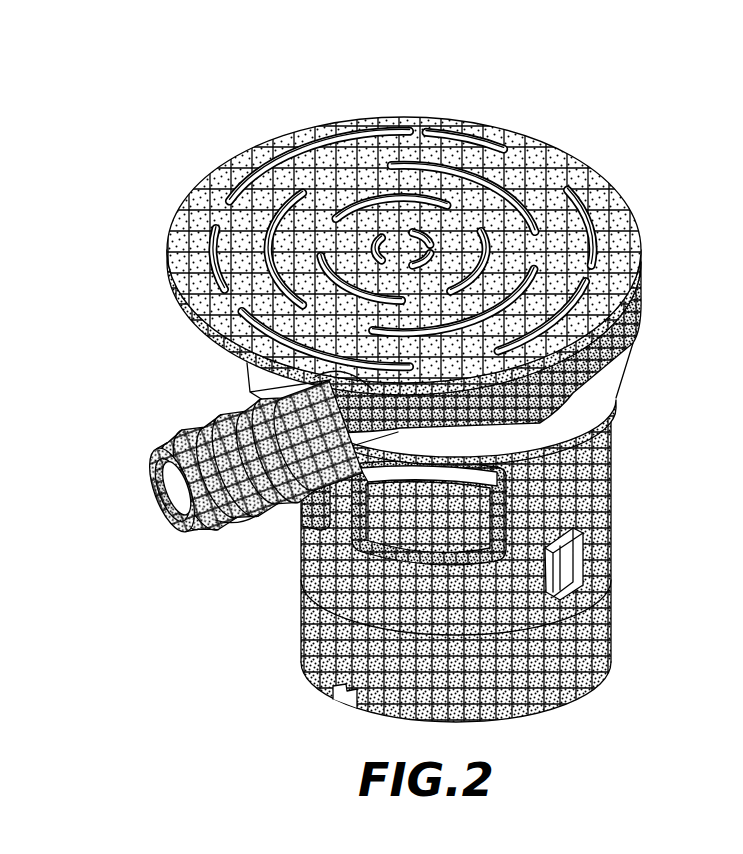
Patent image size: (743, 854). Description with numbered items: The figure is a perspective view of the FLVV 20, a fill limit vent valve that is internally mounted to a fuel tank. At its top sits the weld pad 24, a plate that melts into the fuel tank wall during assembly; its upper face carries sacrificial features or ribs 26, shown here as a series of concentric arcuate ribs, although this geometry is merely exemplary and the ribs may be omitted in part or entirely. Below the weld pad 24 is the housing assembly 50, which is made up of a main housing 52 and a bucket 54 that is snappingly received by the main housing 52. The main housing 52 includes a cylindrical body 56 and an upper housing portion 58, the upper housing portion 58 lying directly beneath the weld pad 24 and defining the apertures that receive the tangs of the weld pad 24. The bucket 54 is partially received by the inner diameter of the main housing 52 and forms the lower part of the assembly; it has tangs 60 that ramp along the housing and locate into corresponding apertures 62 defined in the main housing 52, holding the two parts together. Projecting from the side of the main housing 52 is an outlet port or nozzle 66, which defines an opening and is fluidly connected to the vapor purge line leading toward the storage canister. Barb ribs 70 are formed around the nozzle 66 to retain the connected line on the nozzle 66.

The FLVV 20 is at (416, 401).
The weld pad 24 is at (428, 237).
The sacrificial features or ribs 26 is at (412, 123).
The housing assembly 50 is at (511, 491).
The main housing 52 is at (580, 485).
The bucket 54 is at (597, 655).
The cylindrical body 56 is at (583, 450).
The upper housing portion 58 is at (637, 347).
The tangs 60 is at (590, 605).
The apertures 62 is at (560, 520).
The outlet port or nozzle 66 is at (252, 466).
The barb ribs 70 is at (244, 505).